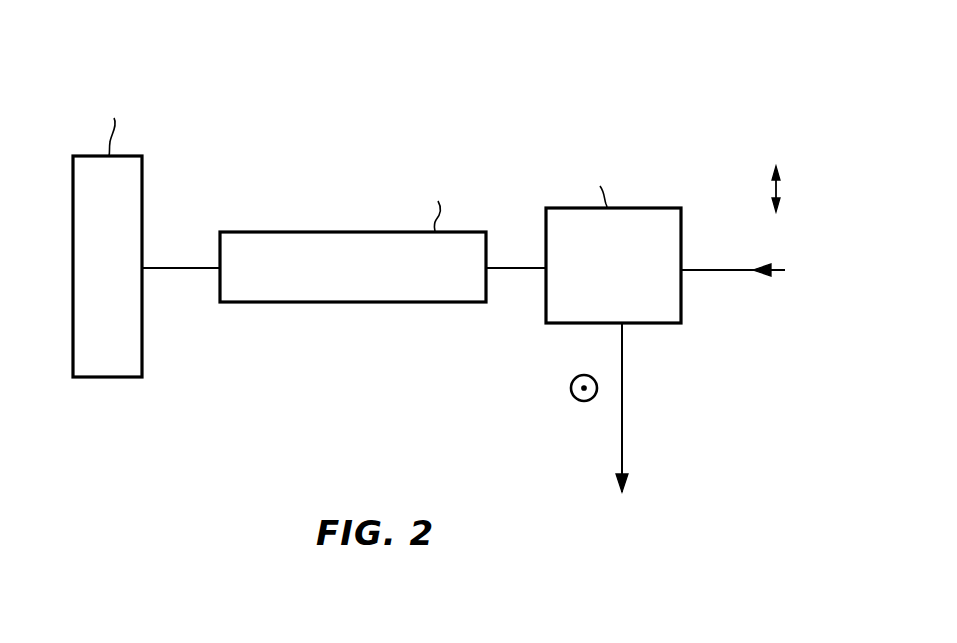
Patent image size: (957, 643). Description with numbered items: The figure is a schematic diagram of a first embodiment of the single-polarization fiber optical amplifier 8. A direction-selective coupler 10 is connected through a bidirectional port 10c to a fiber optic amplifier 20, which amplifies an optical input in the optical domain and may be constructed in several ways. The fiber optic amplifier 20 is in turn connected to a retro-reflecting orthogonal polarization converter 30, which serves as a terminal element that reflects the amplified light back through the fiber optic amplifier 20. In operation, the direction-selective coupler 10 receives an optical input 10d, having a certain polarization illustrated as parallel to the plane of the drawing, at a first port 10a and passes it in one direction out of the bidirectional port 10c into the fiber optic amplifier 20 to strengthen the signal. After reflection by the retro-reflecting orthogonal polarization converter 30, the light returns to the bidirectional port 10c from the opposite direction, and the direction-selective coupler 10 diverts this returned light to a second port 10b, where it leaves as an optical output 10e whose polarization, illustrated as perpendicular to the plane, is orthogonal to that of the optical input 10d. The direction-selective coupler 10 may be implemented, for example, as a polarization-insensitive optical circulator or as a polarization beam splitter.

The single-polarization fiber optical amplifier 8 is at (334, 120).
The direction-selective coupler 10 is at (635, 287).
The first port 10a is at (682, 268).
The second port 10b is at (626, 324).
The bidirectional port 10c is at (546, 268).
The optical input 10d is at (778, 187).
The optical output 10e is at (573, 377).
The fiber optic amplifier 20 is at (368, 285).
The retro-reflecting orthogonal polarization converter 30 is at (121, 283).